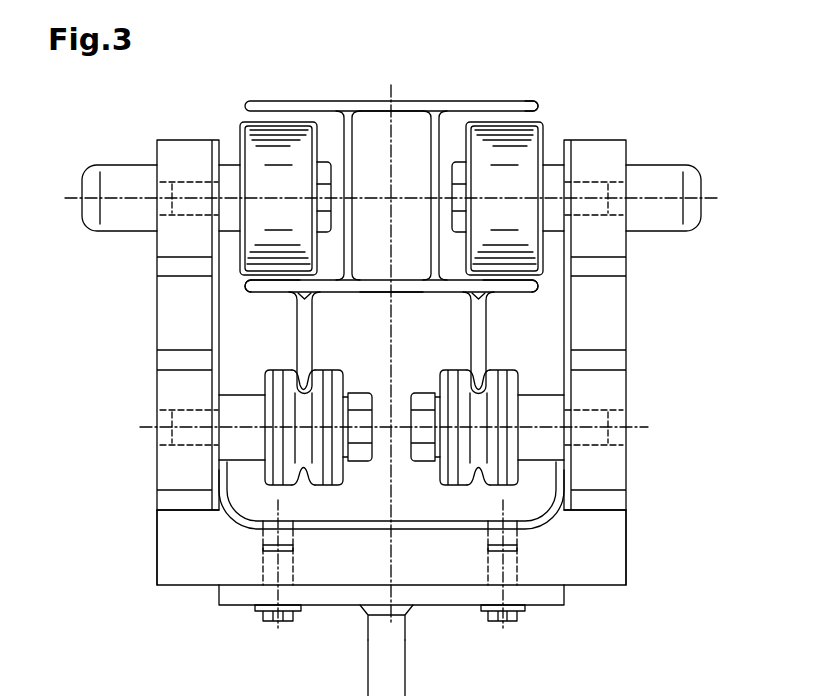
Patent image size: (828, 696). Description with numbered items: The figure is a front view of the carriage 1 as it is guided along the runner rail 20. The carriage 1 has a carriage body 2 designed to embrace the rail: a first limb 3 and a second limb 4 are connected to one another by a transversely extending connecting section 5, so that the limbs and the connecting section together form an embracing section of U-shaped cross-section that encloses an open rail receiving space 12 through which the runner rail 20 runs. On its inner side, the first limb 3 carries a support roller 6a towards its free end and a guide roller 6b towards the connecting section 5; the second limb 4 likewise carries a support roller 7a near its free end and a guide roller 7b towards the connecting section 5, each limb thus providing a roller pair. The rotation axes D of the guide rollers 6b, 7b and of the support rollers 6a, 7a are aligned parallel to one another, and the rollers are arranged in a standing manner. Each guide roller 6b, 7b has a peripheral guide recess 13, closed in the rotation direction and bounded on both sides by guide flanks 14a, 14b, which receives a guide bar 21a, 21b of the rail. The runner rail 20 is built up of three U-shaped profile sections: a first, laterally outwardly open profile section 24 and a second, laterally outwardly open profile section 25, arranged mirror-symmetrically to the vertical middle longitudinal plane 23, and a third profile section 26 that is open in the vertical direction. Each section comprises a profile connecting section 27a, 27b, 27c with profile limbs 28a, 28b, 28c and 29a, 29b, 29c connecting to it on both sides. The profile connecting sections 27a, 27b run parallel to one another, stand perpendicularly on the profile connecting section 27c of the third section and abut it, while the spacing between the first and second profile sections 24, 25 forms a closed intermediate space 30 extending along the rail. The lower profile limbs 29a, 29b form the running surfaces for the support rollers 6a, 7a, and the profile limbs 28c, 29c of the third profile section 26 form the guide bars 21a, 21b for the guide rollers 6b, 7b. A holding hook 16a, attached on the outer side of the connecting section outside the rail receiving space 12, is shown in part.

The carriage 1 is at (148, 548).
The carriage body 2 is at (608, 553).
The first limb 3 is at (180, 323).
The second limb 4 is at (602, 323).
The connecting section 5 is at (412, 568).
The support roller 6a is at (255, 145).
The guide roller 6b is at (275, 470).
The support roller 7a is at (529, 139).
The guide roller 7b is at (503, 472).
The rail receiving space 12 is at (368, 503).
The guide recess 13 is at (297, 482).
The guide flank 14a is at (268, 443).
The guide flank 14b is at (318, 457).
The holding hook 16a is at (395, 663).
The runner rail 20 is at (394, 225).
The guide bar 21a is at (263, 285).
The guide bar 21b is at (520, 285).
The vertical middle longitudinal plane 23 is at (390, 575).
The first profile section 24 is at (348, 240).
The second profile section 25 is at (433, 240).
The third profile section 26 is at (418, 287).
The profile connecting section 27a is at (348, 145).
The profile connecting section 27b is at (433, 153).
The profile connecting section 27c is at (398, 287).
The profile limb 28a is at (260, 108).
The profile limb 28b is at (520, 110).
The profile limb 28c is at (480, 330).
The profile limb 29a is at (240, 277).
The profile limb 29b is at (544, 277).
The profile limb 29c is at (303, 330).
The closed intermediate space 30 is at (405, 122).
The rotation axis D is at (230, 190).